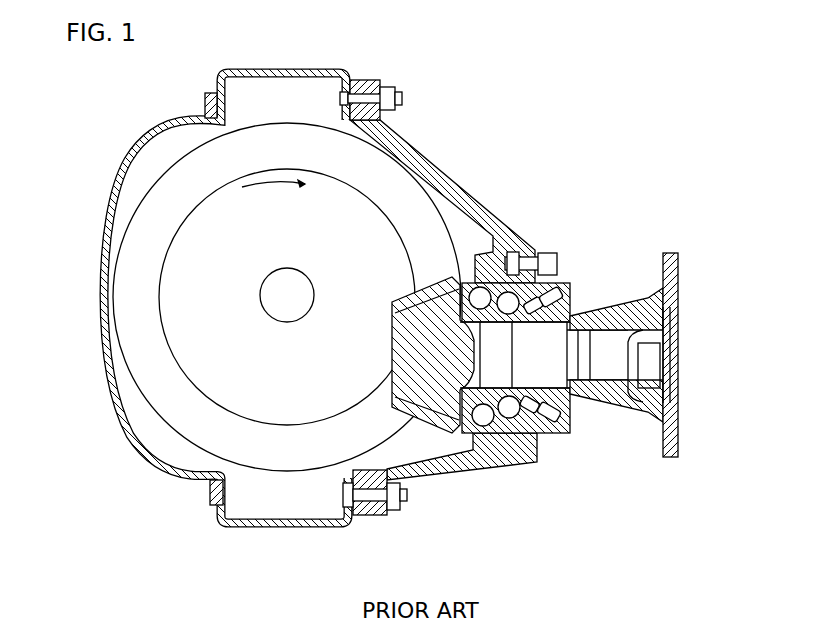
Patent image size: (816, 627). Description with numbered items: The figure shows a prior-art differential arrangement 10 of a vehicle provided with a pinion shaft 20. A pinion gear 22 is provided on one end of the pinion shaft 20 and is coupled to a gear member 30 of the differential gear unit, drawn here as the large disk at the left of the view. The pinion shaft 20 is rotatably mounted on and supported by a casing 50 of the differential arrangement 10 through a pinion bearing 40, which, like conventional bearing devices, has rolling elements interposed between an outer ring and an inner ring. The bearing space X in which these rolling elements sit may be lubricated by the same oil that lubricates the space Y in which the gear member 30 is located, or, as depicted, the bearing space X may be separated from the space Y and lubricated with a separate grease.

The differential arrangement 10 is at (381, 323).
The pinion shaft 20 is at (545, 332).
The pinion gear 22 is at (430, 283).
The gear member 30 is at (168, 413).
The pinion bearing 40 is at (516, 275).
The casing 50 is at (415, 157).
The bearing space X is at (500, 460).
The space Y is at (375, 462).